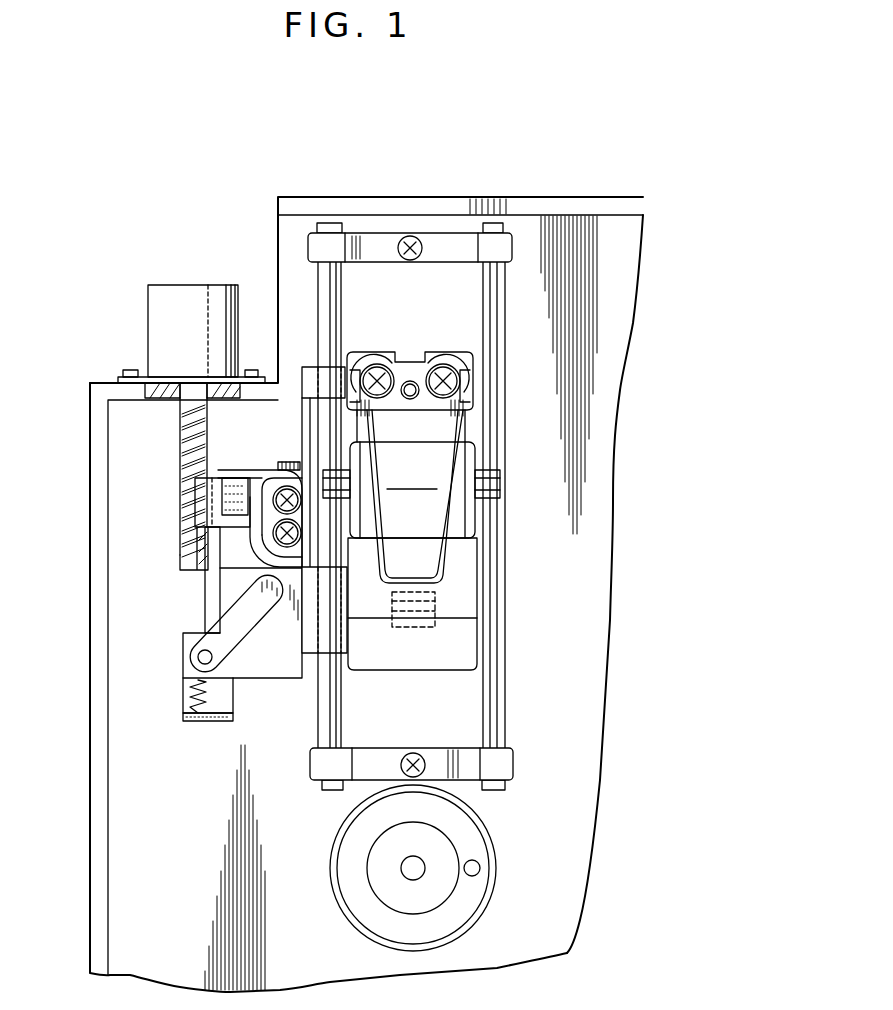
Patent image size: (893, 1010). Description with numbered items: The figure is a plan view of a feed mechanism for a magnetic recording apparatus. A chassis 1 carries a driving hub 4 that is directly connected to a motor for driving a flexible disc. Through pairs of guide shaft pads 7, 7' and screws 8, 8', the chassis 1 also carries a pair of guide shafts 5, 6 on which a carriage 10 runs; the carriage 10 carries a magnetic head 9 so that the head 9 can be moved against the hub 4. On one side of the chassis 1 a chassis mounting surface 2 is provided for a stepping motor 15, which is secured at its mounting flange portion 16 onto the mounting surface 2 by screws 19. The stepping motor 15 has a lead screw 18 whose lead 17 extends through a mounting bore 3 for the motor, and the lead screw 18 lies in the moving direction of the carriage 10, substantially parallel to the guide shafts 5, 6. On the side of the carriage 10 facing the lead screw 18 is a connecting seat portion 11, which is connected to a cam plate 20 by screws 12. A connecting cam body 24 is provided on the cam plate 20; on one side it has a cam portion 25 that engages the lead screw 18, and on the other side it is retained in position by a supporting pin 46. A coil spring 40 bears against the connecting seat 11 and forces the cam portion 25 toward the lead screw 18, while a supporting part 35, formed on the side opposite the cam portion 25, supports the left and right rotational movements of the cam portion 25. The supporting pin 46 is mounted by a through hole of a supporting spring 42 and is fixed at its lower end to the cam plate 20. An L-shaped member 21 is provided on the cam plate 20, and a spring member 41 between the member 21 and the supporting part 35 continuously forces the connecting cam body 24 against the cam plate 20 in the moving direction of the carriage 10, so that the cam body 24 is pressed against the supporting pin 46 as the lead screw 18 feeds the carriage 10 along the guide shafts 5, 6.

The chassis 1 is at (98, 923).
The chassis mounting surface 2 is at (162, 380).
The mounting bore 3 is at (177, 400).
The driving hub 4 is at (493, 885).
The guide shaft 5 is at (320, 745).
The guide shaft 6 is at (502, 660).
The guide shaft pad 7 is at (431, 771).
The guide shaft pad 7' is at (410, 210).
The screw 8 is at (416, 742).
The screw 8' is at (422, 209).
The magnetic head 9 is at (452, 608).
The carriage 10 is at (308, 368).
The connecting seat portion 11 is at (257, 522).
The screws 12 is at (273, 548).
The stepping motor 15 is at (155, 303).
The mounting flange portion 16 is at (118, 378).
The lead 17 is at (180, 488).
The lead screw 18 is at (178, 472).
The screws 19 is at (128, 367).
The cam plate 20 is at (287, 677).
The L-shaped member 21 is at (197, 712).
The connecting cam body 24 is at (233, 598).
The cam portion 25 is at (208, 502).
The supporting part 35 is at (192, 643).
The coil spring 40 is at (262, 483).
The spring member 41 is at (190, 692).
The supporting spring 42 is at (233, 638).
The supporting pin 46 is at (198, 662).